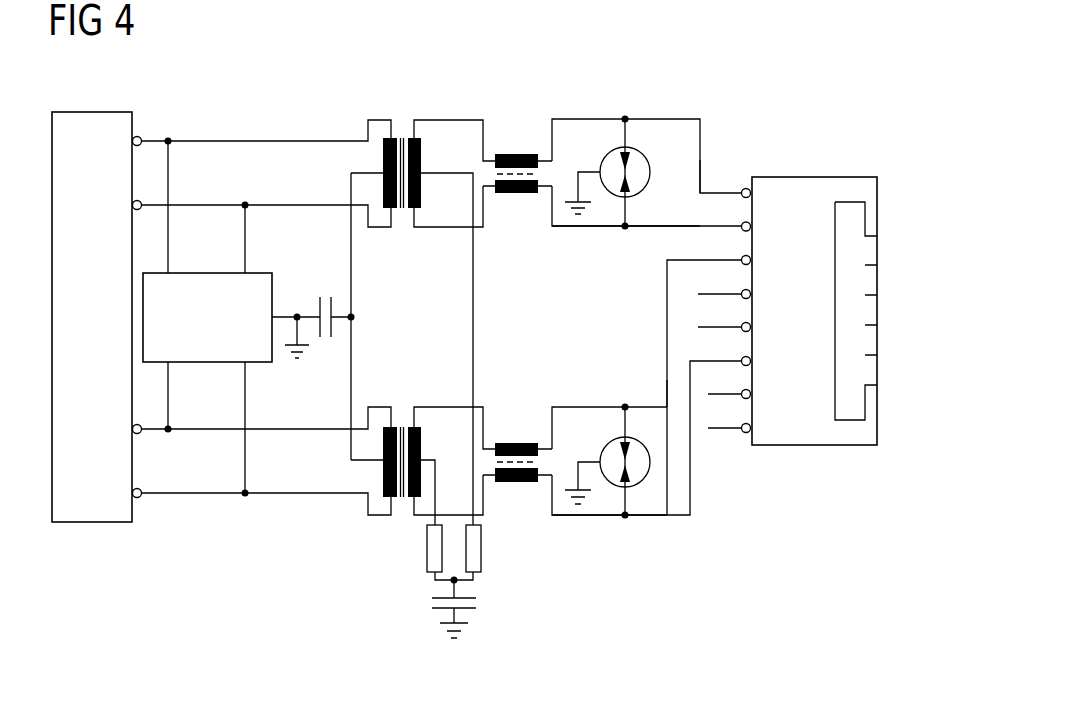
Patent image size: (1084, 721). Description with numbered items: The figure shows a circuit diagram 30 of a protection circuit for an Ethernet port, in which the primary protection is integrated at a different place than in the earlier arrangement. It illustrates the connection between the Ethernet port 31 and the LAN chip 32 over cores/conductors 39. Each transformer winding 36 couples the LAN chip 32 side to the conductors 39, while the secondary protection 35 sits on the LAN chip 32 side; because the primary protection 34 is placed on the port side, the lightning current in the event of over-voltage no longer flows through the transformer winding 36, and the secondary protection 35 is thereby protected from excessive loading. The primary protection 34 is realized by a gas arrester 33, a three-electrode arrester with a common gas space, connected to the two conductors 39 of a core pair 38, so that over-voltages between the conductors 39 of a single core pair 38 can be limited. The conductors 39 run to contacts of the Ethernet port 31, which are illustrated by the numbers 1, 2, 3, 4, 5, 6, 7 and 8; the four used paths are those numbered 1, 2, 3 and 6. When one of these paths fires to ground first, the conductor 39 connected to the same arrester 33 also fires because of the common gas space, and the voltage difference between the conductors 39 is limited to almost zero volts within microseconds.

The circuit diagram 30 is at (890, 254).
The Ethernet port 31 is at (878, 416).
The LAN chip 32 is at (92, 112).
The gas arrester 33 is at (648, 155).
The primary protection 34 is at (567, 226).
The secondary protection 35 is at (207, 273).
The transformer winding 36 is at (401, 135).
The core pair 38 is at (702, 200).
The cores/conductors 39 is at (662, 226).
The path number at Ethernet port 1 is at (739, 182).
The path number at Ethernet port 2 is at (739, 215).
The path number at Ethernet port 3 is at (739, 249).
The pin 4 is at (724, 283).
The pin 5 is at (724, 316).
The path number at Ethernet port 6 is at (739, 350).
The pin 7 is at (729, 383).
The pin 8 is at (729, 417).